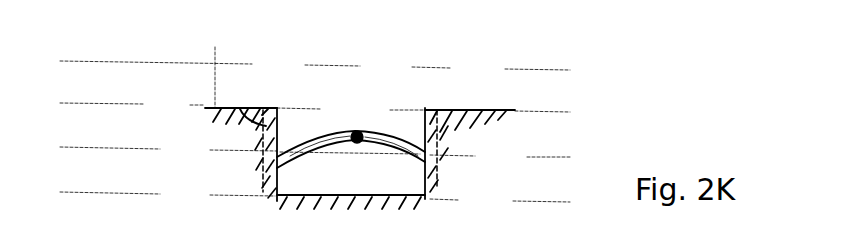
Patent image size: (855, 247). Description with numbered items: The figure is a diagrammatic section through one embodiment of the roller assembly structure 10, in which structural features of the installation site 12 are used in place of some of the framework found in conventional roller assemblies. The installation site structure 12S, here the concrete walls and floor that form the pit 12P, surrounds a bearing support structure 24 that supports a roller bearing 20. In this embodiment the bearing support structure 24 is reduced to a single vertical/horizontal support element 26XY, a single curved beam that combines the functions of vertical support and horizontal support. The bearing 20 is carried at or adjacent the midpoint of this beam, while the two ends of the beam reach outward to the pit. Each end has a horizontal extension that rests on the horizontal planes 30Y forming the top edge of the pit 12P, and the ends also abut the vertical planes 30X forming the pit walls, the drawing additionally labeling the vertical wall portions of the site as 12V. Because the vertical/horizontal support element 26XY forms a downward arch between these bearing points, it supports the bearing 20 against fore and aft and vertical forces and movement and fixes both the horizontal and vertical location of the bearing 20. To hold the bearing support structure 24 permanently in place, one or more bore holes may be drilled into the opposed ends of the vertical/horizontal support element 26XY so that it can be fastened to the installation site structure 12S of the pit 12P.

The roller assembly structure 10 is at (200, 42).
The installation site 12 is at (417, 34).
The substrate vertical surfaces 12V is at (527, 92).
The pit 12P is at (412, 60).
The installation site structure 12S is at (430, 197).
The vertical planes 30X is at (266, 151).
The horizontal planes 30Y is at (262, 186).
The bearing support structure 24 is at (300, 117).
The roller bearing 20 is at (362, 147).
The vertical/horizontal support element 26XY is at (394, 134).